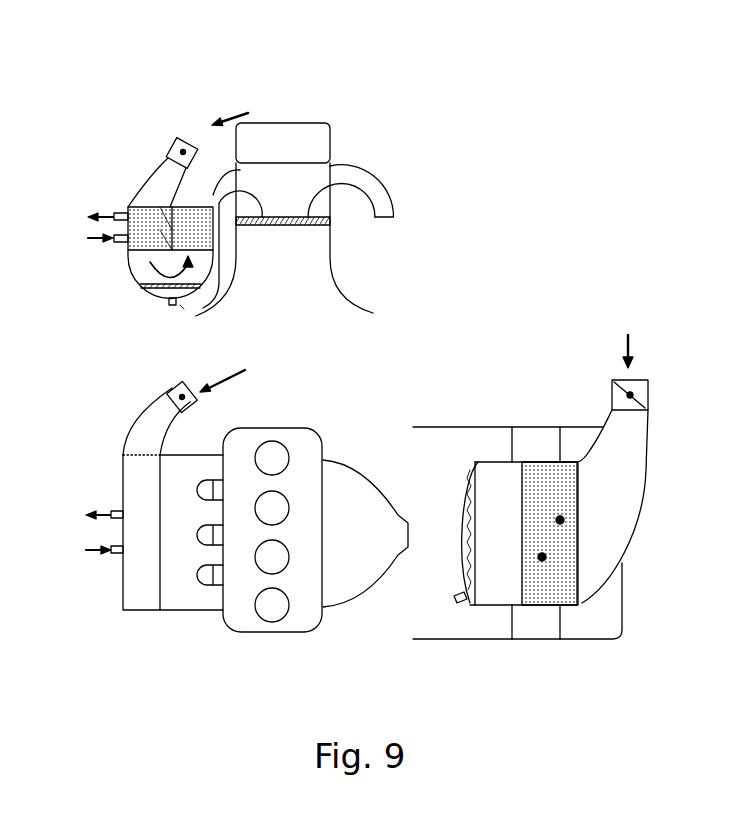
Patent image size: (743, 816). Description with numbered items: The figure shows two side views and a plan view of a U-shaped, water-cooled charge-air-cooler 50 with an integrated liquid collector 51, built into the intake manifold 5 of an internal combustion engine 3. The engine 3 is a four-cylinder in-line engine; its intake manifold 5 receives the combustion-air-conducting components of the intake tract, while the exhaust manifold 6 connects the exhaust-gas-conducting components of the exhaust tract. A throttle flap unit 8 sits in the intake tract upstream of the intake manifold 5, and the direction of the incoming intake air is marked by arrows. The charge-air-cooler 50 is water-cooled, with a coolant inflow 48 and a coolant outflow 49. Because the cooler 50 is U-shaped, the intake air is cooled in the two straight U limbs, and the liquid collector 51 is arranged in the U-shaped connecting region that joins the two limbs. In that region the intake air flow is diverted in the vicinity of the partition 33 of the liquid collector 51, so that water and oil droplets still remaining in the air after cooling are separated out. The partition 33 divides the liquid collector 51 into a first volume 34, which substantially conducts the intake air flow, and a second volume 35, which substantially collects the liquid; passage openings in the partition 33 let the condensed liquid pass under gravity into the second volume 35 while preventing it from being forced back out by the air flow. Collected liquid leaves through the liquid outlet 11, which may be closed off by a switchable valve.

The internal combustion engine 3 is at (291, 283).
The intake manifold 5 is at (173, 665).
The exhaust manifold 6 is at (385, 220).
The throttle flap unit 8 is at (187, 138).
The liquid outlet 11 is at (168, 304).
The partition 33 is at (178, 308).
The first volume 34 is at (512, 545).
The second volume 35 is at (462, 510).
The coolant inflow 48 is at (596, 668).
The coolant outflow 49 is at (612, 472).
The charge-air-cooler 50 is at (128, 208).
The liquid collector 51 is at (126, 258).